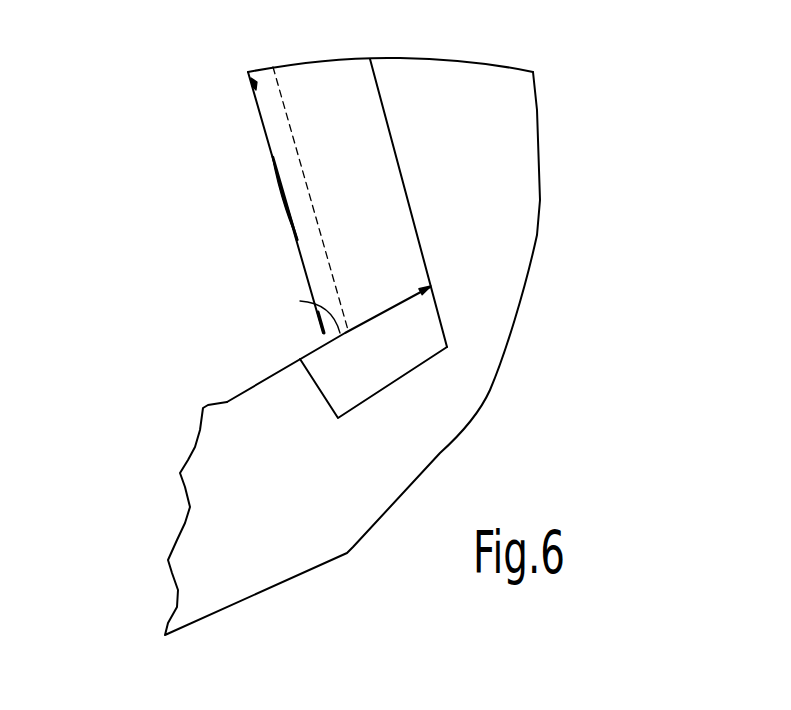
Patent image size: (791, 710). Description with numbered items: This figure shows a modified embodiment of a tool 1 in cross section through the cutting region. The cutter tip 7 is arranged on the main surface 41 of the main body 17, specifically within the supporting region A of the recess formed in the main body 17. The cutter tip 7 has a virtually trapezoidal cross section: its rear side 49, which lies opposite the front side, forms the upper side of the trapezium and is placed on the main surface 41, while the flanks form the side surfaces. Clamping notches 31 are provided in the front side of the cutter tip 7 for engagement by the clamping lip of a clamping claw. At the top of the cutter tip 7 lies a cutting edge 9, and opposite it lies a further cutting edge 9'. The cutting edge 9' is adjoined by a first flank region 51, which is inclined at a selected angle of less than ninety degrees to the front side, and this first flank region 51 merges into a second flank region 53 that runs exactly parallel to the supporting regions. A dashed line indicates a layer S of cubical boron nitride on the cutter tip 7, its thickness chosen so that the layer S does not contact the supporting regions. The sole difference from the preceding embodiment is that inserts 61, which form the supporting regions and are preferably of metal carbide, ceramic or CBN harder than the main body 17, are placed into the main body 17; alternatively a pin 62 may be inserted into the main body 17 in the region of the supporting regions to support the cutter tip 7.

The tool 1 is at (541, 97).
The cutter tip 7 is at (333, 132).
The cutting edge 9 is at (281, 63).
The cutting edge 9' is at (262, 344).
The main body 17 is at (592, 208).
The clamping notches 31 is at (277, 203).
The main surface 41 is at (401, 163).
The rear side 49 is at (378, 105).
The first flank region 51 is at (300, 301).
The second flank region 53 is at (387, 300).
The inserts 61 is at (413, 320).
The pin 62 is at (383, 363).
The supporting region A is at (392, 140).
The layer of cubical boron nitride S is at (313, 242).